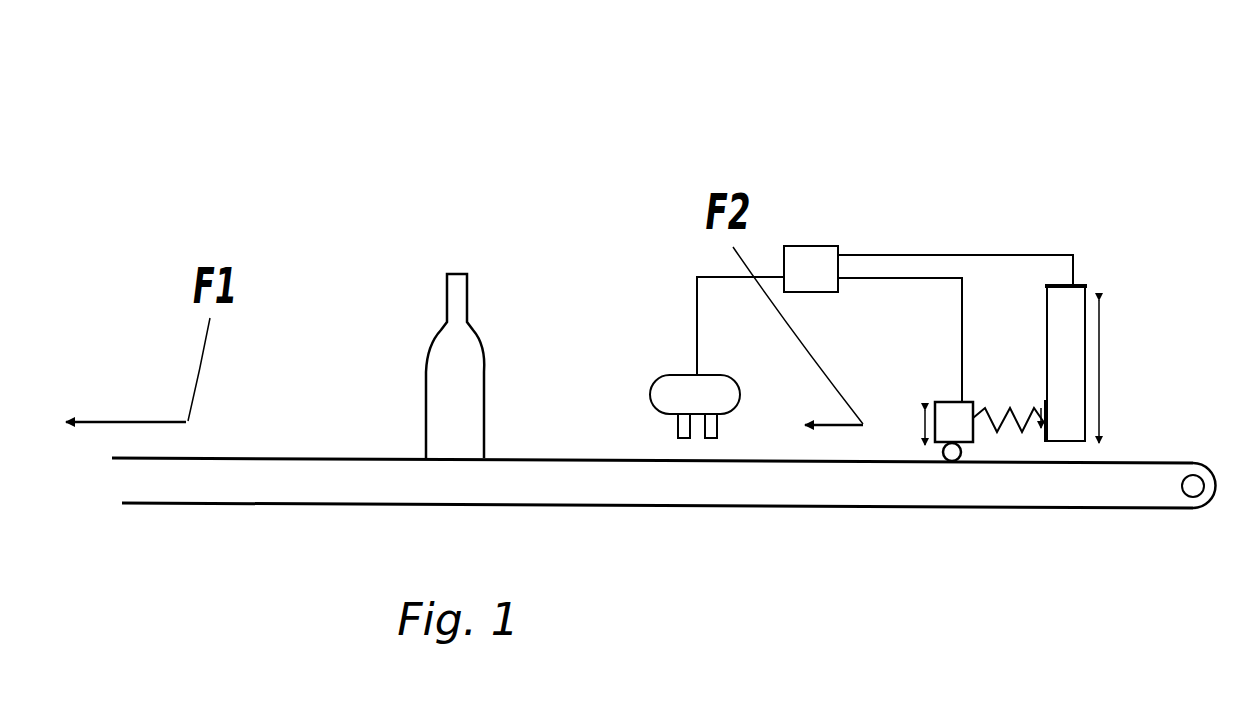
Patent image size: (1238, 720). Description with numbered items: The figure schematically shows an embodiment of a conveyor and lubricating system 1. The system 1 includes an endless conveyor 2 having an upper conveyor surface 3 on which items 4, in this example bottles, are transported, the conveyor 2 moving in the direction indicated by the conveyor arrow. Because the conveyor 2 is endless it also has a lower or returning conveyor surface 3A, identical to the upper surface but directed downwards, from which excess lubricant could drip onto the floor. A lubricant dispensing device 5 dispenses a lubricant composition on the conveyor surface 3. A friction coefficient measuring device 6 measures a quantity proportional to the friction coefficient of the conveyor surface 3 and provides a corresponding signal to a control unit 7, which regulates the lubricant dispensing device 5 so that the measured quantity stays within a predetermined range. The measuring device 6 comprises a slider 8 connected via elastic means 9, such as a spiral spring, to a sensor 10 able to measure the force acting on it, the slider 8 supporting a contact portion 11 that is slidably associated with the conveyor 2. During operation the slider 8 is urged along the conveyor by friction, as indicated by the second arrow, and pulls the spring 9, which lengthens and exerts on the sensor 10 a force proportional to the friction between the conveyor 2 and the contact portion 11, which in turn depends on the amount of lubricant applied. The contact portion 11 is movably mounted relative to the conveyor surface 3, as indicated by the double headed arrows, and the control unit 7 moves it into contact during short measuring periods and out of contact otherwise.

The conveyor and lubricating system 1 is at (476, 200).
The endless conveyor 2 is at (1114, 484).
The upper conveyor surface 3 is at (1135, 462).
The lower or returning conveyor surface 3A is at (595, 507).
The items 4 is at (470, 415).
The lubricant dispensing device 5 is at (680, 392).
The friction coefficient measuring device 6 is at (935, 187).
The control unit 7 is at (820, 270).
The slider 8 is at (948, 410).
The elastic means 9 is at (1003, 407).
The sensor 10 is at (1045, 435).
The contact portion 11 is at (947, 465).